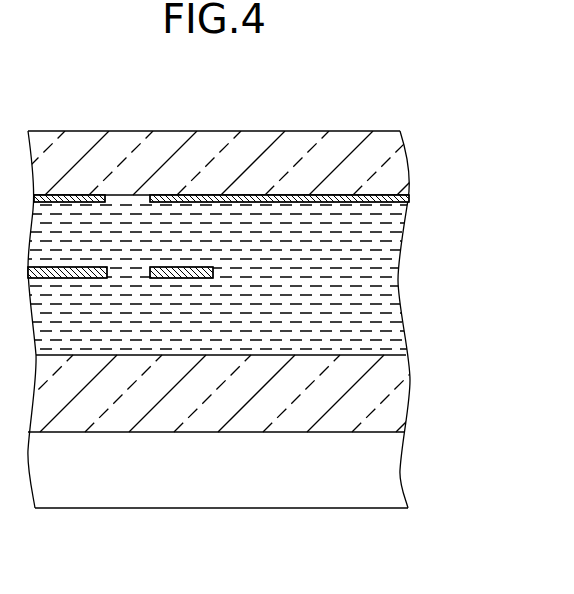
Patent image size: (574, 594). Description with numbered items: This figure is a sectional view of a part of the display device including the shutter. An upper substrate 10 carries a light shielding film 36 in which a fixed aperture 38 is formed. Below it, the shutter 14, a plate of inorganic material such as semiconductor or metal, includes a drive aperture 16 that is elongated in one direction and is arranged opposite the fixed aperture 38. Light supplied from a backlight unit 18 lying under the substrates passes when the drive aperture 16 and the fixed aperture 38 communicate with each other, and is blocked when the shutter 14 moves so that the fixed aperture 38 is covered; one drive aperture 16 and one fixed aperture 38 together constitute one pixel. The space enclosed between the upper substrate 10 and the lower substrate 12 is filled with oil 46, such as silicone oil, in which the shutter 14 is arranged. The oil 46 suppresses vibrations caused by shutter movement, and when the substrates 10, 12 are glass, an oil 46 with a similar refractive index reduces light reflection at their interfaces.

The upper substrate 10 is at (398, 163).
The lower substrate 12 is at (398, 397).
The shutter 14 is at (213, 273).
The drive aperture 16 is at (130, 278).
The backlight unit 18 is at (395, 470).
The light shielding film 36 is at (398, 199).
The fixed aperture 38 is at (128, 201).
The oil 46 is at (386, 282).